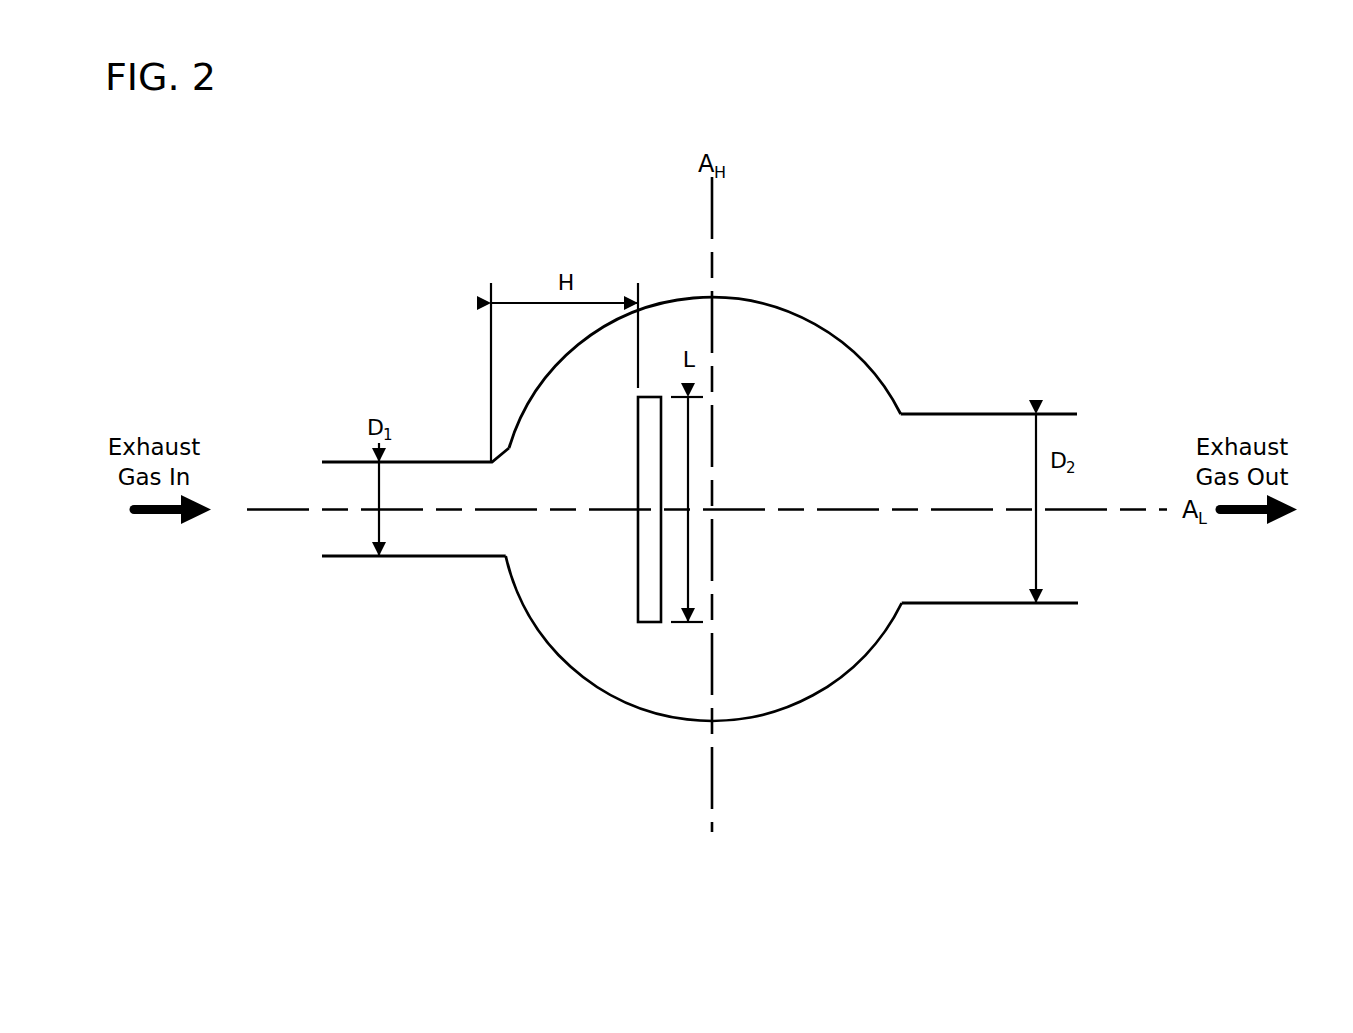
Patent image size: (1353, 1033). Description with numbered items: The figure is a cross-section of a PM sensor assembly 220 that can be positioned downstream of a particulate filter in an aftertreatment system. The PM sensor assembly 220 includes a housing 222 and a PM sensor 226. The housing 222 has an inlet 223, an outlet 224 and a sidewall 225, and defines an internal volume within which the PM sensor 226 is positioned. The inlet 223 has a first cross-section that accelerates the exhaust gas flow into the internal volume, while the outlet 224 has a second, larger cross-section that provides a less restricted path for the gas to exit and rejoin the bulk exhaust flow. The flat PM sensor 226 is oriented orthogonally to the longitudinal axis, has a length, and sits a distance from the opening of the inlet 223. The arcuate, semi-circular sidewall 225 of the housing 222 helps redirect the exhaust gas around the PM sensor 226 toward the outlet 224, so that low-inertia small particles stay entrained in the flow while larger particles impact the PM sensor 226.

The PM sensor assembly 220 is at (886, 208).
The housing 222 is at (652, 703).
The inlet 223 is at (414, 542).
The outlet 224 is at (1001, 593).
The sidewall 225 is at (612, 700).
The PM sensor 226 is at (653, 590).